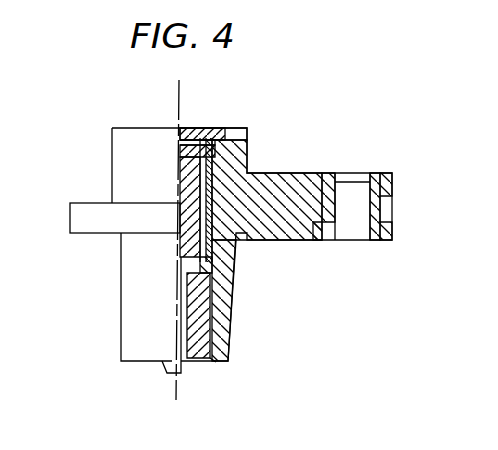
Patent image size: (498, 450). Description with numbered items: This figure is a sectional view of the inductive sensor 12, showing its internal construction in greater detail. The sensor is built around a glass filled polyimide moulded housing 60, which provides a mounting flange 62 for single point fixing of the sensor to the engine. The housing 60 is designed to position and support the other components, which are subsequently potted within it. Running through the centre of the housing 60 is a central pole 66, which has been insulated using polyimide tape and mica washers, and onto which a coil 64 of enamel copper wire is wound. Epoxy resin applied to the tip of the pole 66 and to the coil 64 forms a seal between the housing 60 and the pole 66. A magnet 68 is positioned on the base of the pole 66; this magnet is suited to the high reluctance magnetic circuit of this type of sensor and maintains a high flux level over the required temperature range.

The sensor 12 is at (90, 352).
The housing 60 is at (122, 293).
The mounting flange 62 is at (83, 204).
The coil 64 is at (205, 327).
The central pole 66 is at (180, 366).
The magnet 68 is at (195, 138).